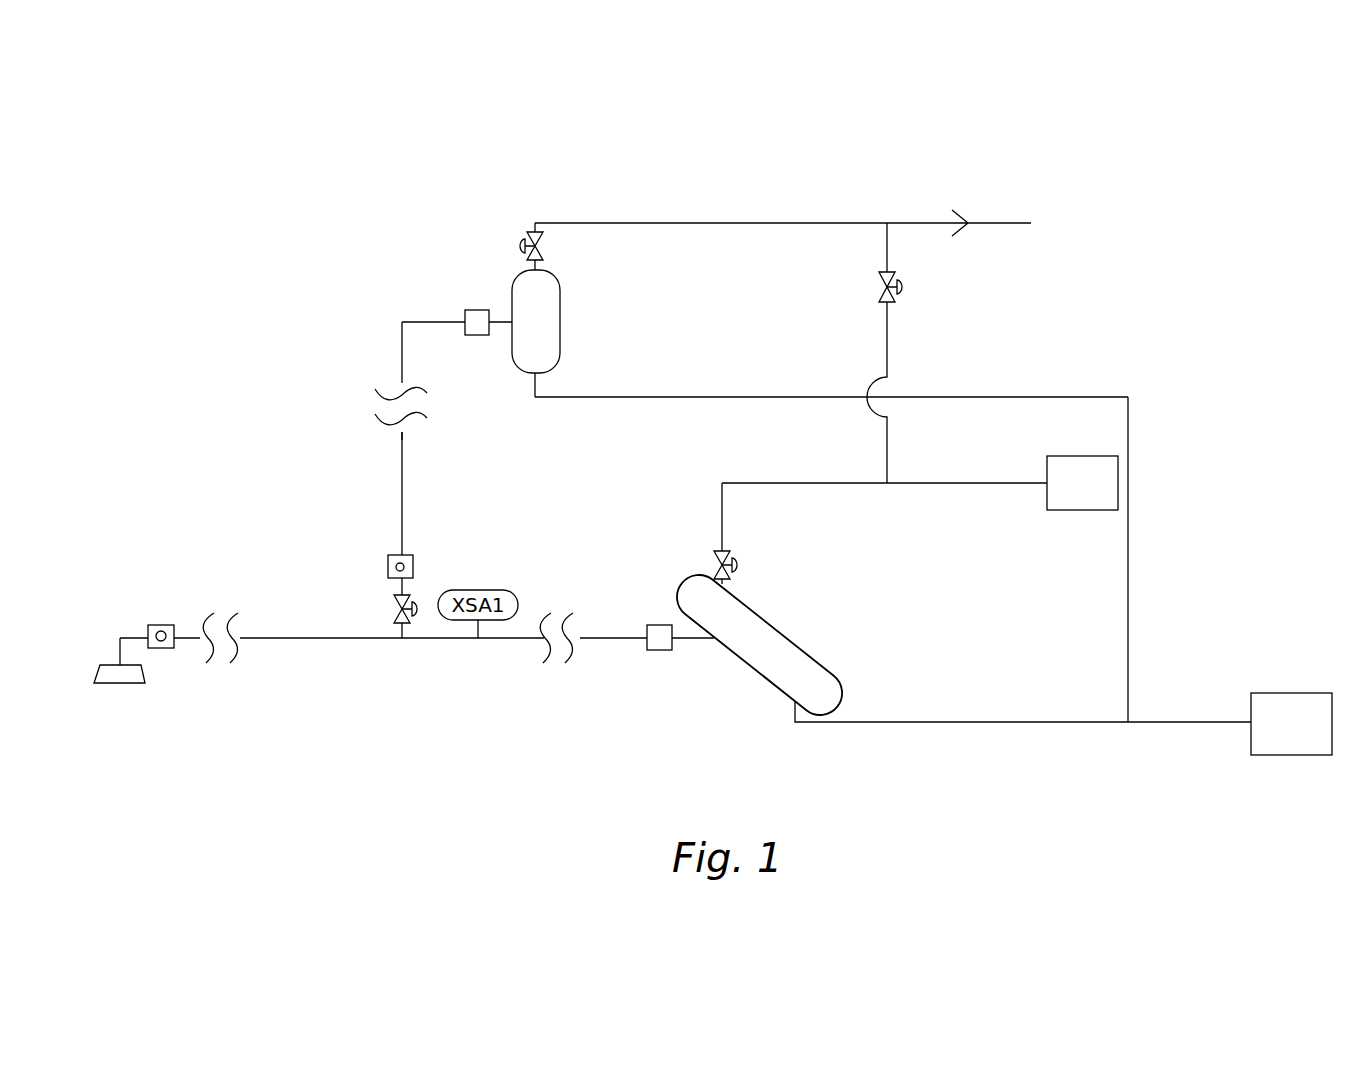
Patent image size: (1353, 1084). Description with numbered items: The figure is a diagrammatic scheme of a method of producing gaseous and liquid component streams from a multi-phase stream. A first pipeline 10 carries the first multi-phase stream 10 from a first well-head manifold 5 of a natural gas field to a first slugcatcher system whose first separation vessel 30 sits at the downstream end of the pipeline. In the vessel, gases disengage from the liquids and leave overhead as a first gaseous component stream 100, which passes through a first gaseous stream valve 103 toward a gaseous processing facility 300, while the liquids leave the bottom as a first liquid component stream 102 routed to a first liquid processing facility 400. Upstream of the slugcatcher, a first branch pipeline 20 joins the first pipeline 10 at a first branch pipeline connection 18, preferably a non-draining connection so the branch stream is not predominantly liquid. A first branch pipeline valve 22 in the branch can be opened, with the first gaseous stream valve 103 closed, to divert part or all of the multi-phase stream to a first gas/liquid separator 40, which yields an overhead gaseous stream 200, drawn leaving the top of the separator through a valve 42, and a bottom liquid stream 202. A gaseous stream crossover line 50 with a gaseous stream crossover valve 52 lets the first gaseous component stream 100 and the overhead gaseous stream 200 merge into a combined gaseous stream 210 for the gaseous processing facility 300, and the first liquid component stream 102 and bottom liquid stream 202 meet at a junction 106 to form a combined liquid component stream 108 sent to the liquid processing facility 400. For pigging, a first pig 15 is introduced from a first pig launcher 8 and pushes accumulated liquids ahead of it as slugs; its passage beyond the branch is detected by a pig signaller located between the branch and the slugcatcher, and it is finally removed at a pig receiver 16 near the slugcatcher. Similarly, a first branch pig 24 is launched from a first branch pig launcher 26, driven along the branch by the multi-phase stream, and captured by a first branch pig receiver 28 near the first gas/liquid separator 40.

The first well-head manifold 5 is at (143, 672).
The first pig launcher 8 is at (166, 626).
The first pipeline 10 is at (320, 638).
The first pig 15 is at (158, 632).
The pig receiver 16 is at (660, 650).
The first branch pipeline connection 18 is at (402, 643).
The first branch pipeline 20 is at (402, 463).
The first branch pipeline valve 22 is at (393, 615).
The first branch pig 24 is at (400, 565).
The first branch pig launcher 26 is at (410, 548).
The first branch pig receiver 28 is at (478, 310).
The first separation vessel 30 is at (782, 637).
The first gas/liquid separator 40 is at (557, 322).
The valve 42 is at (537, 240).
The gaseous stream crossover line 50 is at (888, 342).
The gaseous stream crossover valve 52 is at (880, 293).
The first gaseous component stream 100 is at (818, 483).
The first liquid component stream 102 is at (895, 722).
The first gaseous stream valve 103 is at (719, 567).
The junction 106 is at (1128, 722).
The combined liquid component stream 108 is at (1192, 722).
The overhead gaseous stream 200 is at (732, 223).
The bottom liquid stream 202 is at (750, 397).
The combined gaseous stream 210 is at (973, 483).
The gaseous processing facility 300 is at (1082, 483).
The first liquid processing facility 400 is at (1291, 724).